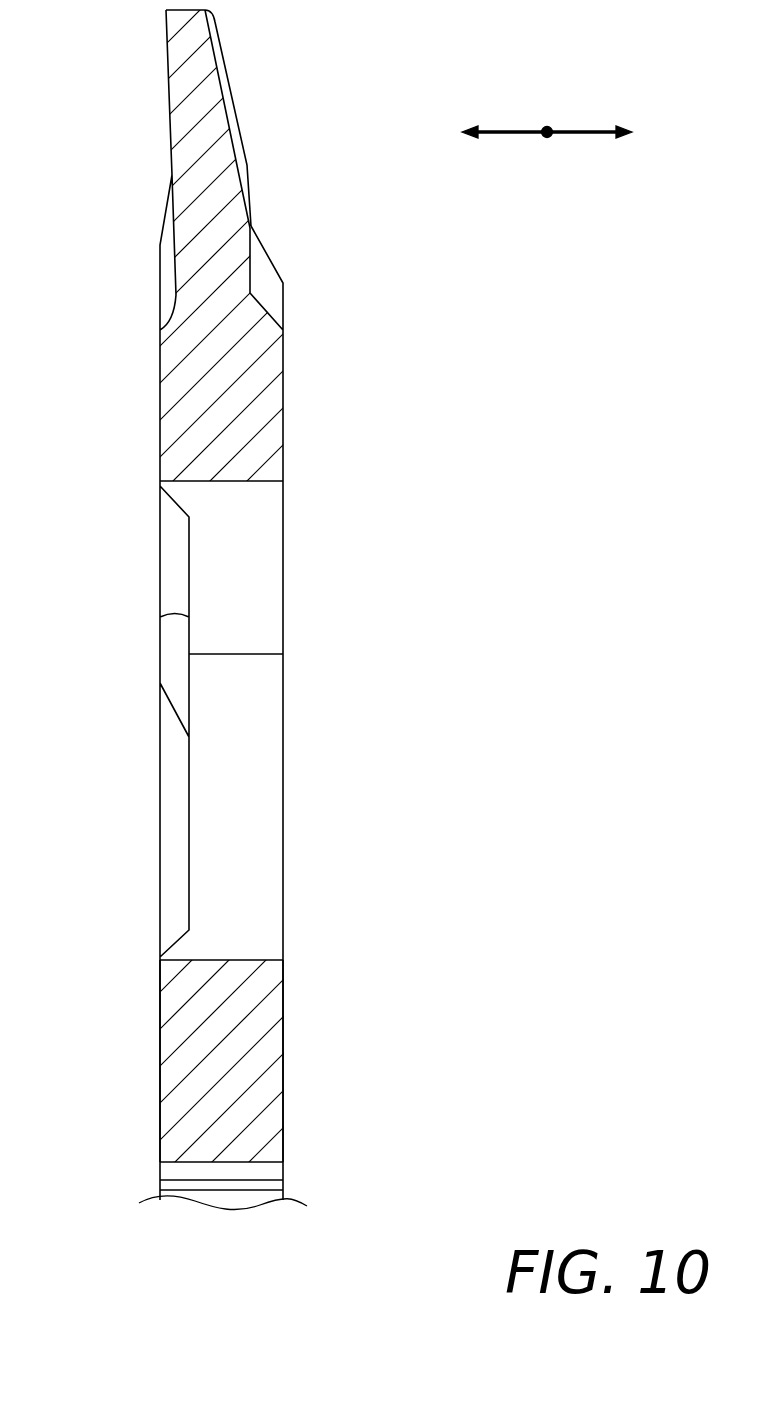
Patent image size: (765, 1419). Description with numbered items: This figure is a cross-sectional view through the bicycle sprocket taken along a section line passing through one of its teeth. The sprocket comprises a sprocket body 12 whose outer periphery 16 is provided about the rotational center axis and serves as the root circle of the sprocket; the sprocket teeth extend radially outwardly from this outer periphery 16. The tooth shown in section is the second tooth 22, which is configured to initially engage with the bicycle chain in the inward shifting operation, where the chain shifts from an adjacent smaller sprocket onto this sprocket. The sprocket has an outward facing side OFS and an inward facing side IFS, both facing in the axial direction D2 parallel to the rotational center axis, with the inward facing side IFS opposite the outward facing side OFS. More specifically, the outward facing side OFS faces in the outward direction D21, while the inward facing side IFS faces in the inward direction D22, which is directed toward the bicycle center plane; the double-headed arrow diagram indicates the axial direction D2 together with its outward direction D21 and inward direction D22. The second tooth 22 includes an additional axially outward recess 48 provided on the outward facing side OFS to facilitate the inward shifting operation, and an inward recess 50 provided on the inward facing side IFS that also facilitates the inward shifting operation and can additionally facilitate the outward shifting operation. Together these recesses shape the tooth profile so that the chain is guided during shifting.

The second tooth 22 is at (253, 131).
The additional axially outward recess 48 is at (165, 243).
The inward recess 50 is at (265, 251).
The outer periphery 16 is at (296, 467).
The sprocket body 12 is at (296, 1115).
The inward facing side IFS is at (296, 1048).
The outward facing side OFS is at (150, 1045).
The axial direction D2 is at (620, 48).
The outward direction D21 is at (492, 130).
The inward direction D22 is at (573, 130).